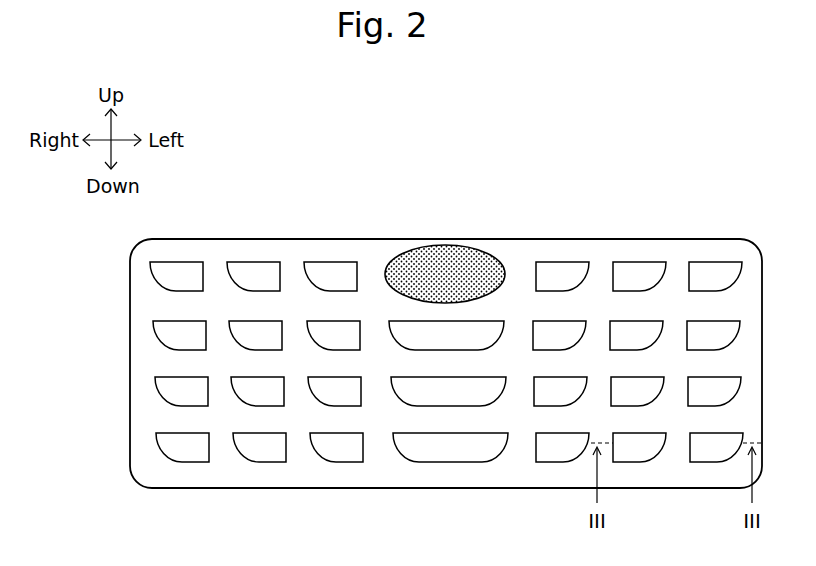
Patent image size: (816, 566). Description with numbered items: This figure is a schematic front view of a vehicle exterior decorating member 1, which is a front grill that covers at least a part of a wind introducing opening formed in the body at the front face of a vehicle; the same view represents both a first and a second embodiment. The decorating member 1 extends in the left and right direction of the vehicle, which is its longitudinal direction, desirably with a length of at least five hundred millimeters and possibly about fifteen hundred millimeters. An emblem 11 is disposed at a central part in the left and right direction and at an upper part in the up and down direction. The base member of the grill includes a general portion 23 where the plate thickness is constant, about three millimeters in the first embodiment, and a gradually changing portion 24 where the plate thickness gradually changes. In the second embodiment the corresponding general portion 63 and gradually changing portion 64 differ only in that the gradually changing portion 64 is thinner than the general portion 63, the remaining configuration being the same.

The vehicle exterior decorating member 1 is at (446, 337).
The emblem 11 is at (450, 250).
The general portion 23 is at (259, 239).
The general portion 63 is at (292, 270).
The gradually changing portion 24 is at (342, 239).
The gradually changing portion 64 is at (327, 268).